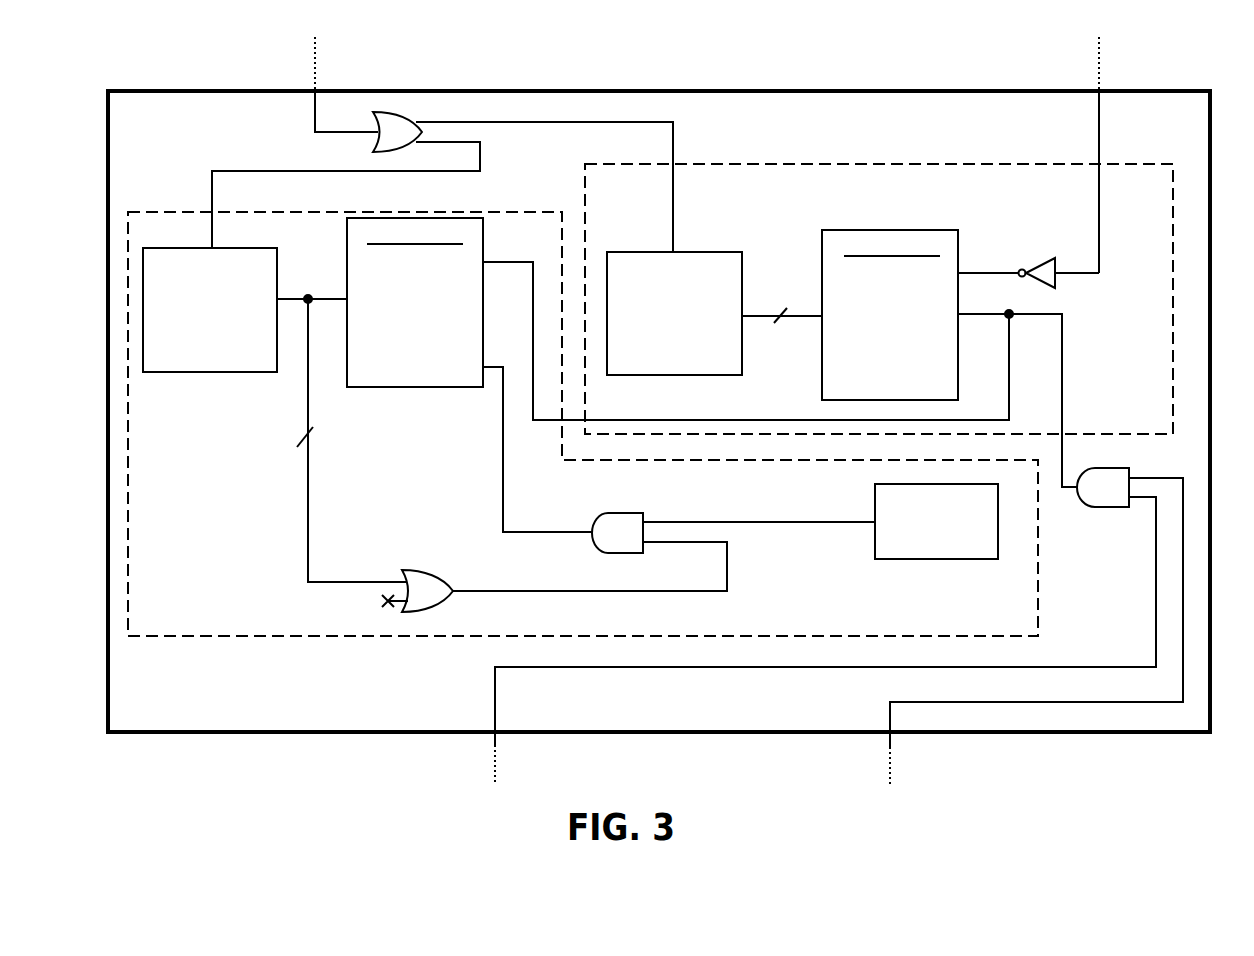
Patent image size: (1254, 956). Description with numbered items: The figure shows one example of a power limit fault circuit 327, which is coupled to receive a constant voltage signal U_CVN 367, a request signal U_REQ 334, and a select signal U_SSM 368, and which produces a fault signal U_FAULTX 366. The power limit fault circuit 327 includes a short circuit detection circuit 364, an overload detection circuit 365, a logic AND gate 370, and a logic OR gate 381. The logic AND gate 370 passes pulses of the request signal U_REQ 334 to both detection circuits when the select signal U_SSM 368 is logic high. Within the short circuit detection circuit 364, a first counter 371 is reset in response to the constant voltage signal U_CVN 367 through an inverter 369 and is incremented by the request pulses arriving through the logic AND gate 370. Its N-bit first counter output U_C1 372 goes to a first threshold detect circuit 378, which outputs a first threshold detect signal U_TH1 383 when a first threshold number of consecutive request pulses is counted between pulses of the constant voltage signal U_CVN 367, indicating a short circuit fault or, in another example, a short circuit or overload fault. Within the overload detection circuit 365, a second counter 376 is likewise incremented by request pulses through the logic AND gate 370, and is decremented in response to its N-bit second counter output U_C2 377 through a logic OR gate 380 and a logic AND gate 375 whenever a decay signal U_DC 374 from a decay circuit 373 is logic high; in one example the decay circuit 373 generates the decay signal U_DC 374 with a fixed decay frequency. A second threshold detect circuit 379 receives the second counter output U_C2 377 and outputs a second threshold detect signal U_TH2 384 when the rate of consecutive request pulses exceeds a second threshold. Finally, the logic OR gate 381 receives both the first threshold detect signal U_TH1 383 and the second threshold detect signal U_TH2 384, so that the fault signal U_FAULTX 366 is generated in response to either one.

The power limit fault circuit 327 is at (290, 738).
The request signal 334 is at (967, 770).
The short circuit detection circuit 364 is at (905, 158).
The overload detection circuit 365 is at (435, 644).
The fault signal 366 is at (415, 62).
The constant voltage signal 367 is at (1165, 62).
The select signal 368 is at (563, 770).
The inverter 369 is at (1040, 256).
The logic AND gate 370 is at (1092, 515).
The first counter 371 is at (820, 380).
The first counter output 372 is at (781, 285).
The decay circuit 373 is at (870, 548).
The decay signal 374 is at (770, 507).
The logic AND gate 375 is at (592, 516).
The second counter 376 is at (410, 392).
The second counter output 377 is at (317, 269).
The first threshold detect circuit 378 is at (627, 250).
The second threshold detect circuit 379 is at (232, 380).
The logic OR gate 380 is at (440, 572).
The logic OR gate 381 is at (378, 143).
The first threshold detect signal 383 is at (533, 116).
The second threshold detect signal 384 is at (540, 158).